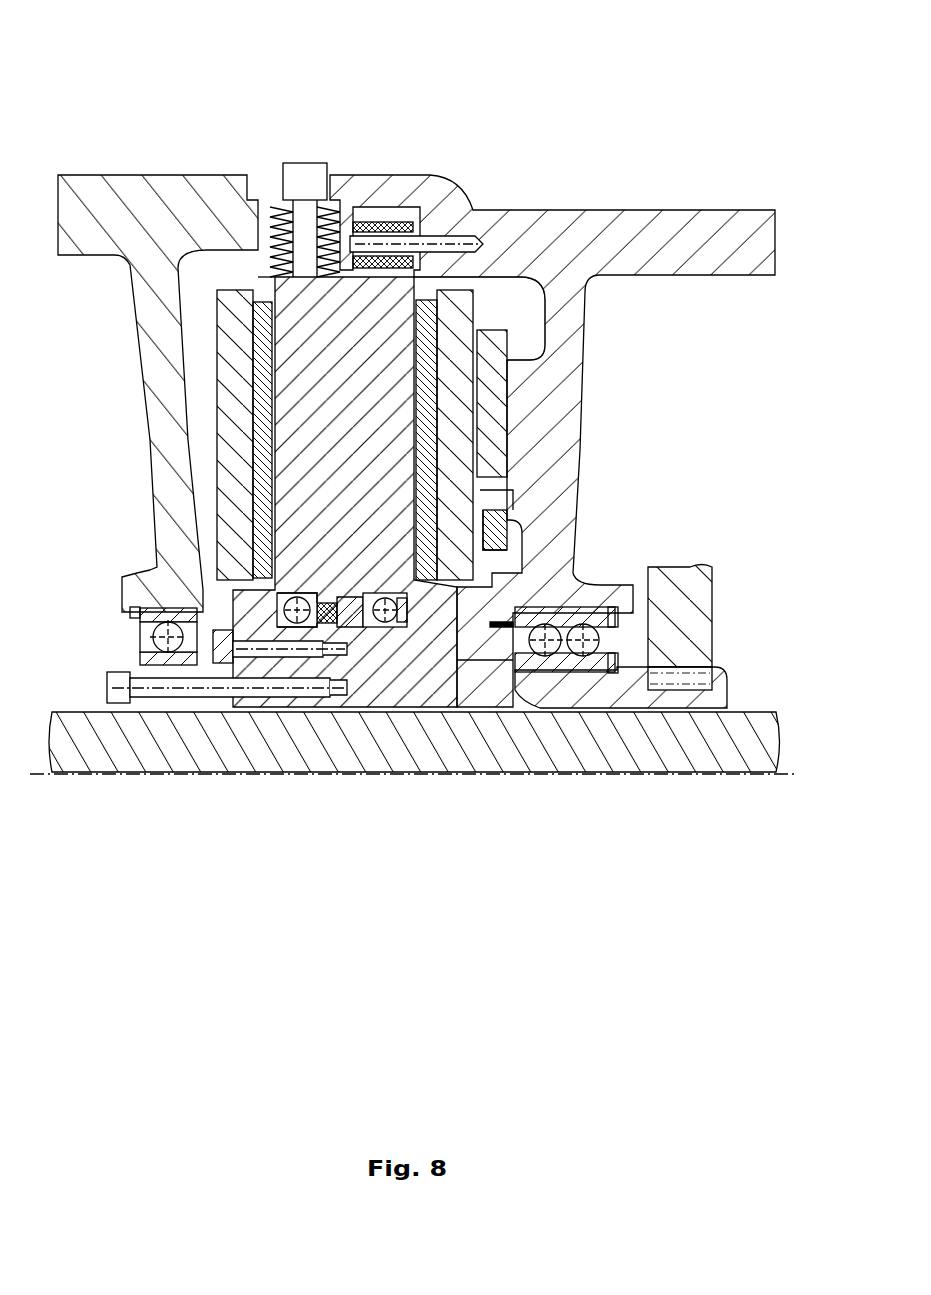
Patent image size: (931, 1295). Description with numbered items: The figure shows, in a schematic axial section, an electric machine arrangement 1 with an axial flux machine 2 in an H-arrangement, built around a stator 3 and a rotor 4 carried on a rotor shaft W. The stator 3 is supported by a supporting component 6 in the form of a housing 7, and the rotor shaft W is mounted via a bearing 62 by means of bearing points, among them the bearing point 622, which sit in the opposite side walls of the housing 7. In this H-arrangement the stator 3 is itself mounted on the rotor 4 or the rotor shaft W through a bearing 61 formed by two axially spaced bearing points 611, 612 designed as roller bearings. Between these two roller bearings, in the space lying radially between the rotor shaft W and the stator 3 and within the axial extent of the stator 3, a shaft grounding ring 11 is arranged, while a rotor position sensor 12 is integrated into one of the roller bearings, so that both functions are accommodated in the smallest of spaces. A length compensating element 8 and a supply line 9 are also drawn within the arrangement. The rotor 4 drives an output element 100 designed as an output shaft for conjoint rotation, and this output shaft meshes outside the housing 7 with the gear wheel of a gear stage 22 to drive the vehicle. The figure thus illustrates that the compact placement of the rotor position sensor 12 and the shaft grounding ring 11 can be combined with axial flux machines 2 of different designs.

The electric machine arrangement 1 is at (402, 113).
The axial flux machine 2 is at (494, 300).
The stator 3 is at (288, 203).
The rotor 4 is at (242, 282).
The supporting component 6 is at (416, 408).
The housing 7 is at (553, 222).
The length compensating element 8 is at (404, 214).
The supply line 9 is at (316, 314).
The shaft grounding ring 11 is at (490, 530).
The rotor position sensor 12 is at (482, 407).
The gear stage 22 is at (677, 590).
The bearing 61 is at (264, 731).
The first bearing point 611 is at (171, 662).
The second bearing point 612 is at (395, 638).
The bearing 62 is at (554, 738).
The second bearing point 622 is at (544, 678).
The output element 100 is at (577, 690).
The rotor shaft W is at (497, 692).